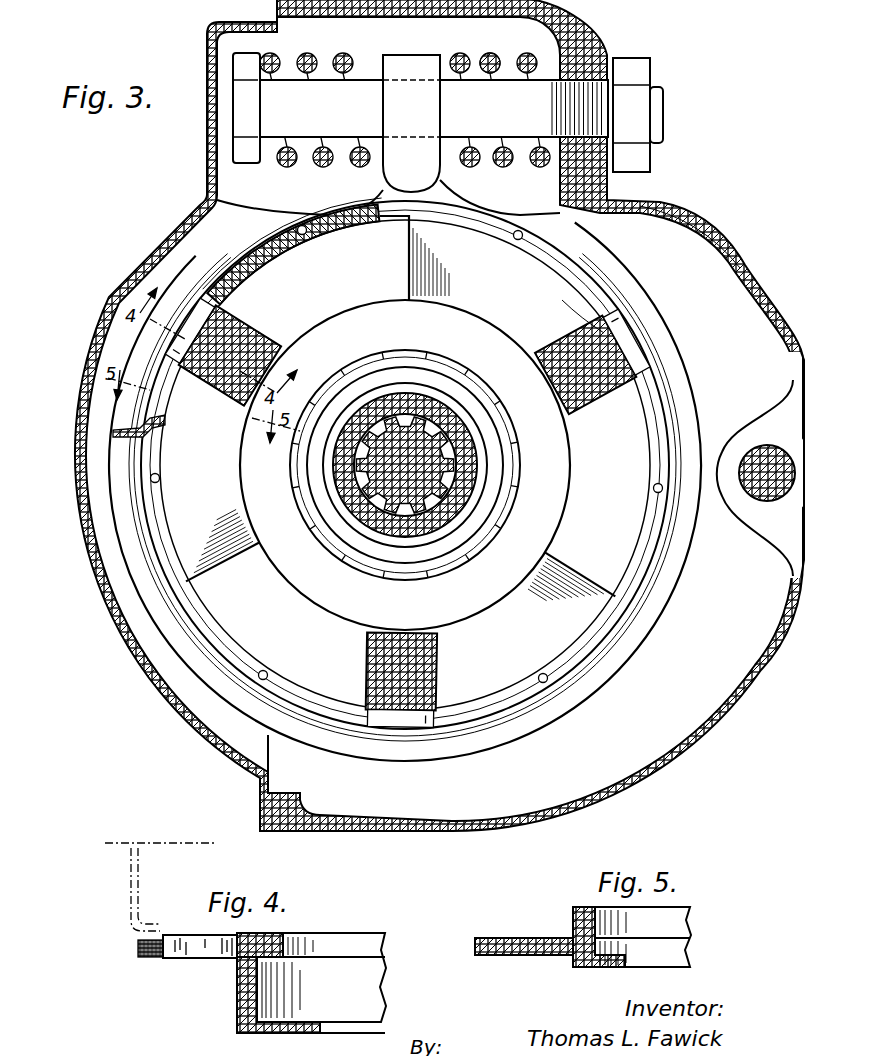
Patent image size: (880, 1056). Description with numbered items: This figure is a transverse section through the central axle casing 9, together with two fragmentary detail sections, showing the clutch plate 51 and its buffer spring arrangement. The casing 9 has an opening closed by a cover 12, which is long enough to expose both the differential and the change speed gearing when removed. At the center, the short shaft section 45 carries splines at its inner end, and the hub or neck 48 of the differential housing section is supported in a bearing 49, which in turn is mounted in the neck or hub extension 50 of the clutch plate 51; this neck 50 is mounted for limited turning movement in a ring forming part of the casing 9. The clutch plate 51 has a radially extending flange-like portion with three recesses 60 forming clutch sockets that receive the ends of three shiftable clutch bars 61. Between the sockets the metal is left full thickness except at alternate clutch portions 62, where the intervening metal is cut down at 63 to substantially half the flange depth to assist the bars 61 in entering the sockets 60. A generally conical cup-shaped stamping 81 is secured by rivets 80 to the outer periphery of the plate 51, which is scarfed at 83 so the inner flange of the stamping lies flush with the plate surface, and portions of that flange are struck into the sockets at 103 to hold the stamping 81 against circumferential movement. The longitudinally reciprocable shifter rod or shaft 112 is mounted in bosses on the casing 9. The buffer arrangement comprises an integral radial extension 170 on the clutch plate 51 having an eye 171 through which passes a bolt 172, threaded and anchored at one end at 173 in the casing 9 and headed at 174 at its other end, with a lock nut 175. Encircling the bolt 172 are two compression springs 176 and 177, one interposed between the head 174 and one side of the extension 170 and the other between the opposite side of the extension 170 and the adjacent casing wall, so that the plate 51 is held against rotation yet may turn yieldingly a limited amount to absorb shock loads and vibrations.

In FIG. 3, the central axle casing 9 is at (742, 265).
In FIG. 3, the cover 12 is at (80, 540).
In FIG. 3, the short shaft section 45 is at (455, 465).
In FIG. 3, the hub or neck 48 is at (470, 500).
In FIG. 3, the bearing 49 is at (522, 486).
In FIG. 4, the neck or hub extension 50 is at (240, 1006).
In FIG. 5, the neck or hub extension 50 is at (577, 907).
In FIG. 3, the clutch plate 51 is at (262, 278).
In FIG. 4, the clutch plate 51 is at (270, 934).
In FIG. 5, the clutch plate 51 is at (530, 945).
In FIG. 3, the recesses 60 is at (260, 316).
In FIG. 4, the recesses 60 is at (203, 950).
In FIG. 3, the shiftable clutch bars 61 is at (272, 342).
In FIG. 3, the clutch portions 62 is at (480, 302).
In FIG. 5, the clutch portions 62 is at (517, 963).
In FIG. 5, the cut down portion 63 is at (571, 967).
In FIG. 3, the rivets 80 is at (306, 234).
In FIG. 3, the cup-shaped stamping 81 is at (580, 262).
In FIG. 4, the cup-shaped stamping 81 is at (128, 900).
In FIG. 3, the scarfed portion 83 is at (285, 236).
In FIG. 4, the scarfed portion 83 is at (140, 948).
In FIG. 3, the struck-in portions 103 is at (640, 356).
In FIG. 3, the shifter rod or shaft 112 is at (762, 450).
In FIG. 3, the radial extension 170 is at (395, 178).
In FIG. 3, the eye 171 is at (395, 80).
In FIG. 3, the bolt 172 is at (487, 130).
In FIG. 3, the threaded anchored end 173 is at (590, 95).
In FIG. 3, the bolt head 174 is at (246, 150).
In FIG. 3, the lock nut 175 is at (640, 78).
In FIG. 3, the compression spring 176 is at (310, 70).
In FIG. 3, the compression spring 177 is at (490, 60).